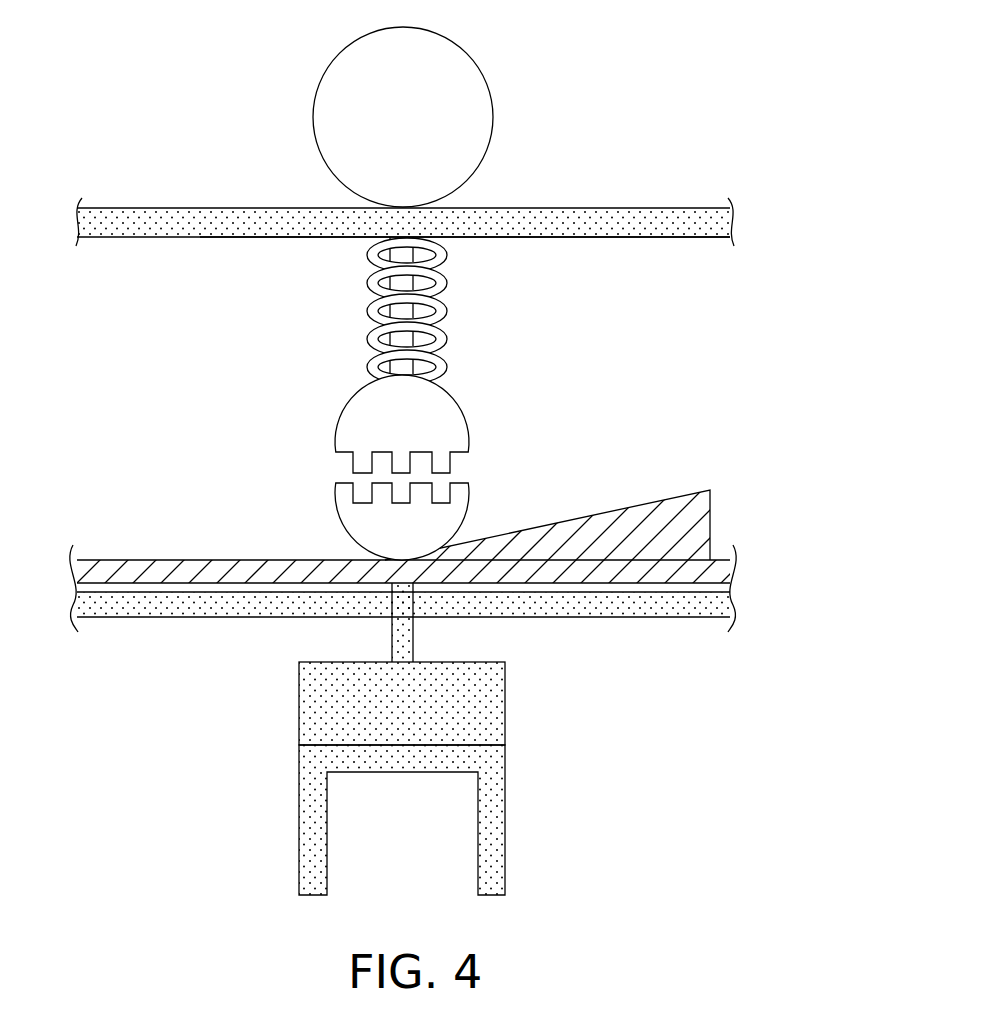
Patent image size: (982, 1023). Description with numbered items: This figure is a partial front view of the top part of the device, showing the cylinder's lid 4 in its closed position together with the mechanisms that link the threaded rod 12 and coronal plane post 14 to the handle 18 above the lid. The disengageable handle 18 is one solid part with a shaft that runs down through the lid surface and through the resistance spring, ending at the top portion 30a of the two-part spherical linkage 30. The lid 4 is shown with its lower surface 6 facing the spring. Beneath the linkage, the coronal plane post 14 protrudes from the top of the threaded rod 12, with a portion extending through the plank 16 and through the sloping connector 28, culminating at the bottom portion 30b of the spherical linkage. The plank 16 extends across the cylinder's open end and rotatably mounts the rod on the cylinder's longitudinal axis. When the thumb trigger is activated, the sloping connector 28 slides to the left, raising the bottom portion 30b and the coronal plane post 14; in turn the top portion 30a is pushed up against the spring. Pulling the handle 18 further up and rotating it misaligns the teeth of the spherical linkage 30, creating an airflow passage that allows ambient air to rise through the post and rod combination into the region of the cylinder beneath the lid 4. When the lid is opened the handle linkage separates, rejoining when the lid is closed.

The lid 4 is at (625, 208).
The lower surface of upper plate 6 is at (676, 237).
The threaded rod 12 is at (460, 828).
The coronal plane post 14 is at (505, 700).
The plank 16 is at (748, 600).
The disengageable handle 18 is at (455, 70).
The sloping connector 28 is at (703, 535).
The spherical linkage 30 is at (397, 467).
The top portion of the spherical linkage 30a is at (468, 436).
The bottom portion of the spherical linkage 30b is at (478, 522).